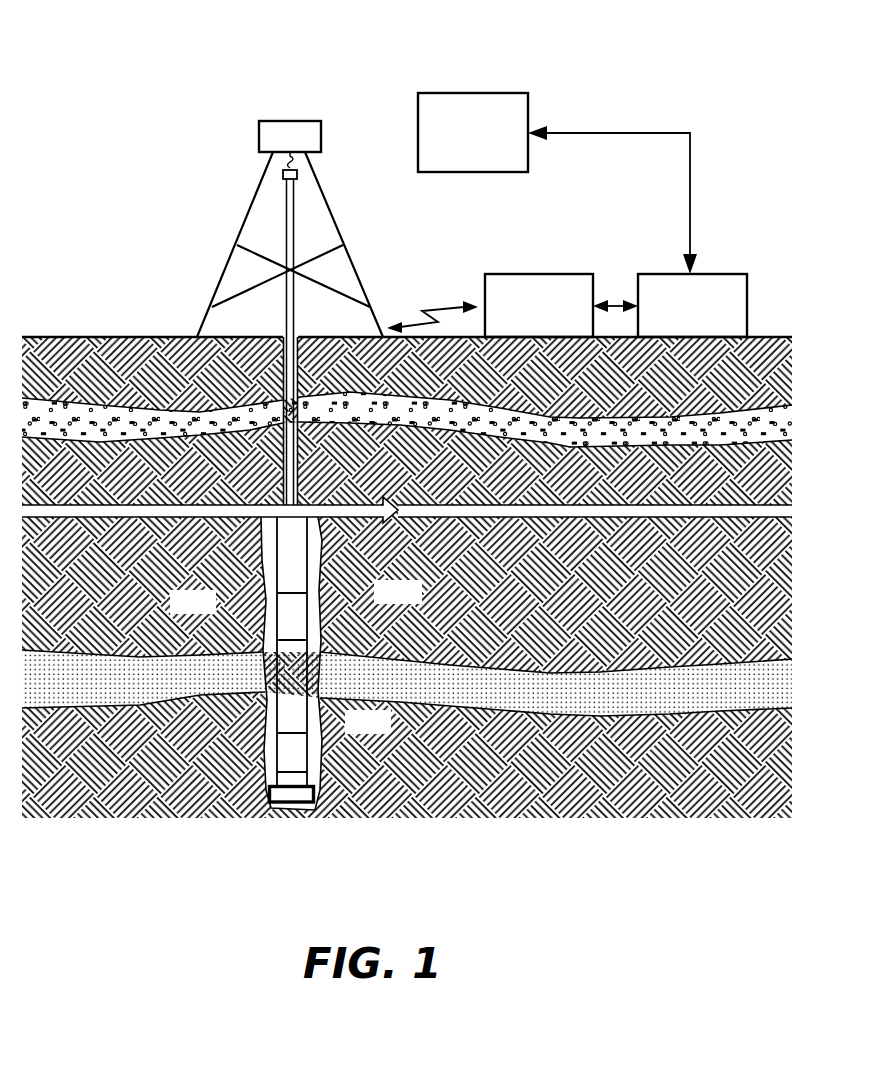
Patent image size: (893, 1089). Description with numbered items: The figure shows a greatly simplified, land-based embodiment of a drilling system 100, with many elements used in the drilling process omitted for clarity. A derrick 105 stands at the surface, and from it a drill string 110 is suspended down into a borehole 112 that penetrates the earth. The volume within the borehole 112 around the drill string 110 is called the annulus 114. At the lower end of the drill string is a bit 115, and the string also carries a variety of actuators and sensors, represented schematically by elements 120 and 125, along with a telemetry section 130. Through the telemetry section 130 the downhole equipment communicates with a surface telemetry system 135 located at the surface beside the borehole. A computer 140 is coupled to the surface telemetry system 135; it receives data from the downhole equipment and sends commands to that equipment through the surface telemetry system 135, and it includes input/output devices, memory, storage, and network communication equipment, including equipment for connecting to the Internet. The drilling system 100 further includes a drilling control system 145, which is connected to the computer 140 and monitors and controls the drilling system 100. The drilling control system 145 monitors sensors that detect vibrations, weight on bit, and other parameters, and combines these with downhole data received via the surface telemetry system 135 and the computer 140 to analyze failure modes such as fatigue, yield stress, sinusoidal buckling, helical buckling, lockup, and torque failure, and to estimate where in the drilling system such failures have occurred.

The drilling system 100 is at (566, 48).
The derrick 105 is at (300, 121).
The drill string 110 is at (295, 230).
The borehole 112 is at (297, 337).
The annulus 114 is at (317, 622).
The bit 115 is at (290, 793).
The actuators and sensors 120 is at (275, 752).
The actuators and sensors 125 is at (309, 716).
The telemetry section 130 is at (273, 612).
The surface telemetry system 135 is at (530, 274).
The computer 140 is at (718, 274).
The drilling control system 145 is at (472, 93).